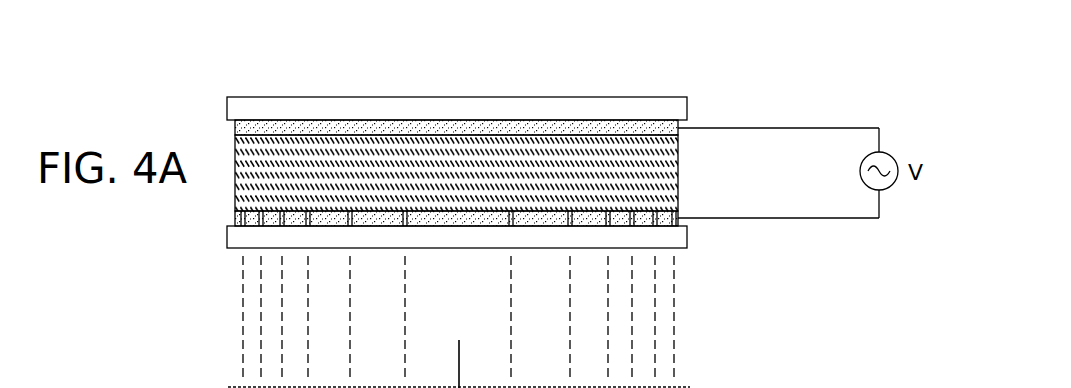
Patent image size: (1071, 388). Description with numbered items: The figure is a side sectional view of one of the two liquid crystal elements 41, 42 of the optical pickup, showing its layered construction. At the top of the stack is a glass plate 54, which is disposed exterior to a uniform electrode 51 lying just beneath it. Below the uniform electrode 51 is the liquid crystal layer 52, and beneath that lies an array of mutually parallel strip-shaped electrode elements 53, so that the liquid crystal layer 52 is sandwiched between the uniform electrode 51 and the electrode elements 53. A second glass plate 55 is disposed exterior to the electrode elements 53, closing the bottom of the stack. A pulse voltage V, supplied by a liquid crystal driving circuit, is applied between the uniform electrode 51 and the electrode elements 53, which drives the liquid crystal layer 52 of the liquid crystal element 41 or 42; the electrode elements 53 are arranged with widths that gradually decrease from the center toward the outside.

The liquid crystal element 41 is at (560, 162).
The liquid crystal element 42 is at (560, 162).
The uniform electrode 51 is at (682, 128).
The liquid crystal layer 52 is at (680, 173).
The electrode elements 53 is at (643, 220).
The glass plate 54 is at (577, 110).
The glass plate 55 is at (650, 240).